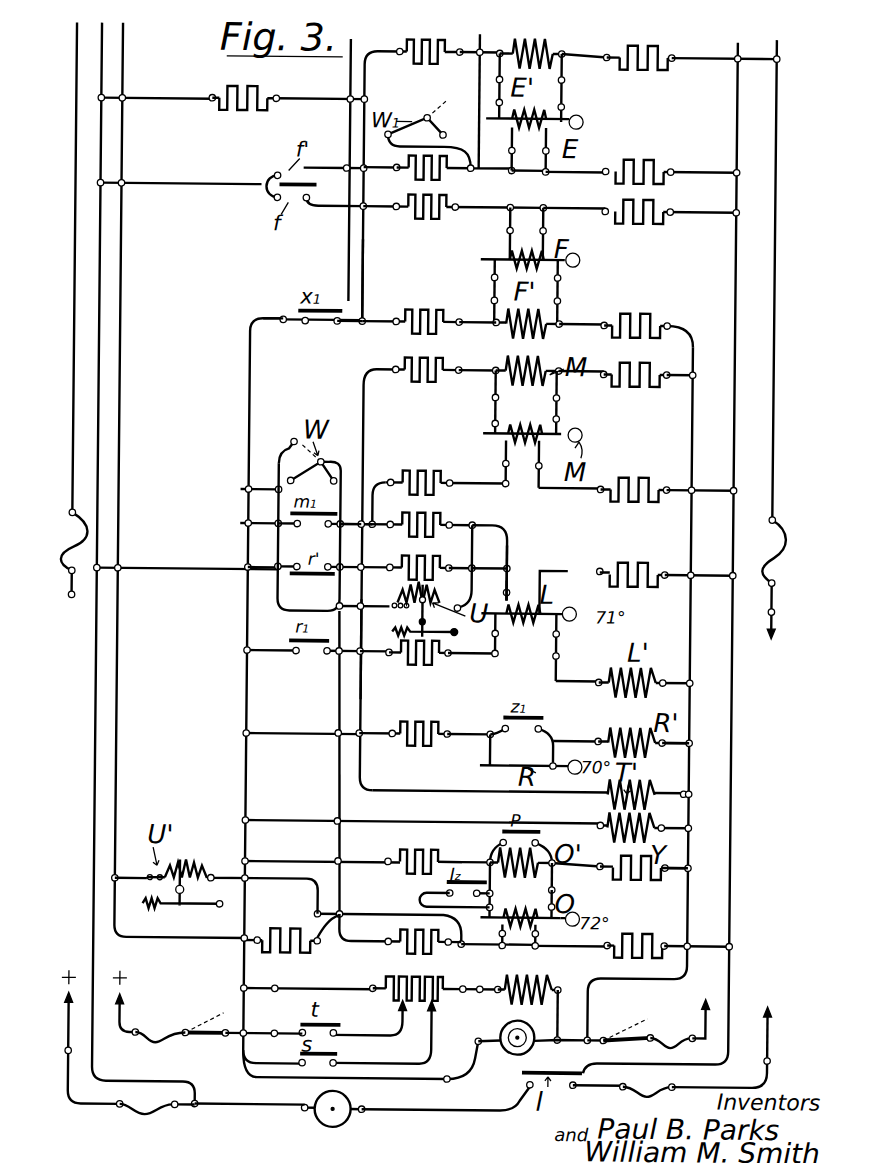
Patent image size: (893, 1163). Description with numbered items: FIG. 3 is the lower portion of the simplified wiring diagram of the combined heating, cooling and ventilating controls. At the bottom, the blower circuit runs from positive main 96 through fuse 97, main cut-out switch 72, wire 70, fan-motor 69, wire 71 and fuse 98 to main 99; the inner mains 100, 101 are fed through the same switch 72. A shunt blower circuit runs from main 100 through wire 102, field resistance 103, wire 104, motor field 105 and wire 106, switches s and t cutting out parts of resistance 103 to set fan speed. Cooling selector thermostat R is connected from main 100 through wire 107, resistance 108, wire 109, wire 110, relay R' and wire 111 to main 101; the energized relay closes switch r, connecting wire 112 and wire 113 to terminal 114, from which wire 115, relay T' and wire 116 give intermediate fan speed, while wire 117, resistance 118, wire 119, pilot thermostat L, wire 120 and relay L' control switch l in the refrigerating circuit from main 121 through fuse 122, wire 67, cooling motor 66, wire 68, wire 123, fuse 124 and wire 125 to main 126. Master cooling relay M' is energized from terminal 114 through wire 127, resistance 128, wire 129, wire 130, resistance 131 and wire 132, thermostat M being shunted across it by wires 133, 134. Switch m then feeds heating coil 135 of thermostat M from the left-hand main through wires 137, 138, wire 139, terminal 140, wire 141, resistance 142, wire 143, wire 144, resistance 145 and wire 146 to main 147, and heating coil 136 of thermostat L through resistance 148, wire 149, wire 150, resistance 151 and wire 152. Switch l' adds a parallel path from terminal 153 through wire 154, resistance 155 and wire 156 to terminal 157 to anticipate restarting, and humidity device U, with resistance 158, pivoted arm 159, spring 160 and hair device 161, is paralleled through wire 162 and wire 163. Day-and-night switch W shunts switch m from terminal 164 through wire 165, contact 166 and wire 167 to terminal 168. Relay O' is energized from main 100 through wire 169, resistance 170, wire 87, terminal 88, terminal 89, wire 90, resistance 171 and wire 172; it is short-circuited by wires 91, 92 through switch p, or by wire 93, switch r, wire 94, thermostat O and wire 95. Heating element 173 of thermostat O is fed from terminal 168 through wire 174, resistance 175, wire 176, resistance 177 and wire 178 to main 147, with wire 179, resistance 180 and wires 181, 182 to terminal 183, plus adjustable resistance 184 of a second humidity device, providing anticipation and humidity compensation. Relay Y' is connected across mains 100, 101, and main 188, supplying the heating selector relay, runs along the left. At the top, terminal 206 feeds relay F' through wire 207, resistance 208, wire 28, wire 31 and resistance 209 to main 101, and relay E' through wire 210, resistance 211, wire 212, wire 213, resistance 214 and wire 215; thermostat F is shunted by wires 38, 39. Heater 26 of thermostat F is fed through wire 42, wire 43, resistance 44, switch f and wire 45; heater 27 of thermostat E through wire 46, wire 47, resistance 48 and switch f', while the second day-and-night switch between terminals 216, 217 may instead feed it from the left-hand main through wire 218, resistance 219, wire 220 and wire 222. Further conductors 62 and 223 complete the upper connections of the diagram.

The auxiliary electric heater 26 is at (527, 234).
The heating coil 27 is at (535, 113).
The wire 28 is at (466, 325).
The wire 31 is at (571, 326).
The wire 38 is at (492, 289).
The wire 39 is at (560, 289).
The wire 42 is at (641, 220).
The wire 43 is at (335, 216).
The resistance 44 is at (436, 220).
The wire 45 is at (179, 198).
The wire 46 is at (642, 180).
The wire 47 is at (502, 170).
The resistance 48 is at (387, 181).
The wire 62 is at (346, 77).
The cooling motor 66 is at (328, 1126).
The wire 67 is at (228, 1108).
The wire 68 is at (412, 1112).
The fan-motor 69 is at (503, 1033).
The wire 70 is at (250, 1078).
The wire 71 is at (566, 1043).
The main cut-out switch 72 is at (612, 1043).
The wire 87 is at (449, 858).
The terminal 88 is at (477, 858).
The terminal 89 is at (563, 880).
The wire 90 is at (575, 898).
The wire 91 is at (489, 846).
The wire 92 is at (547, 847).
The wire 93 is at (515, 907).
The wire 94 is at (428, 898).
The wire 95 is at (548, 908).
The positive main 96 is at (131, 1003).
The fuse 97 is at (158, 1046).
The fuse 98 is at (673, 1031).
The main 99 is at (707, 1009).
The inner main 100 is at (250, 336).
The inner main 101 is at (690, 334).
The wire 102 is at (270, 992).
The field resistance 103 is at (382, 987).
The wire 104 is at (478, 992).
The motor field 105 is at (549, 996).
The wire 106 is at (562, 1000).
The wire 107 is at (322, 737).
The resistance 108 is at (392, 737).
The wire 109 is at (470, 737).
The wire 110 is at (577, 751).
The wire 111 is at (662, 744).
The wire 112 is at (268, 656).
The wire 113 is at (328, 656).
The terminal 114 is at (363, 665).
The wire 115 is at (375, 792).
The wire 116 is at (668, 795).
The wire 117 is at (380, 656).
The resistance 118 is at (420, 667).
The wire 119 is at (478, 656).
The wire 120 is at (555, 682).
The main 121 is at (67, 1086).
The fuse 122 is at (148, 1118).
The wire 123 is at (600, 1101).
The fuse 124 is at (649, 1101).
The wire 125 is at (719, 1075).
The main 126 is at (767, 1043).
The wire 127 is at (362, 380).
The resistance 128 is at (415, 383).
The wire 129 is at (463, 376).
The wire 130 is at (598, 391).
The resistance 131 is at (645, 386).
The wire 132 is at (668, 378).
The wire 133 is at (494, 407).
The wire 134 is at (560, 410).
The heating coil 135 is at (505, 456).
The heating coil 136 is at (97, 657).
The wire 137 is at (185, 581).
The wire 138 is at (320, 554).
The wire 139 is at (383, 555).
The terminal 140 is at (373, 528).
The wire 141 is at (414, 492).
The resistance 142 is at (412, 472).
The wire 143 is at (475, 488).
The wire 144 is at (570, 490).
The resistance 145 is at (636, 500).
The wire 146 is at (700, 491).
The main 147 is at (733, 460).
The resistance 148 is at (418, 518).
The wire 149 is at (510, 535).
The wire 150 is at (574, 588).
The resistance 151 is at (640, 586).
The wire 152 is at (693, 580).
The terminal 153 is at (272, 571).
The wire 154 is at (408, 573).
The resistance 155 is at (458, 557).
The wire 156 is at (494, 555).
The terminal 157 is at (495, 552).
The resistance 158 is at (459, 568).
The pivoted control arm 159 is at (406, 610).
The spring 160 is at (407, 633).
The humidity device 161 is at (450, 634).
The wire 162 is at (350, 594).
The wire 163 is at (475, 594).
The terminal 164 is at (243, 521).
The wire 165 is at (243, 488).
The contact 166 is at (293, 440).
The wire 167 is at (340, 458).
The terminal 168 is at (342, 522).
The wire 169 is at (400, 874).
The resistance 170 is at (340, 855).
The resistance 171 is at (654, 892).
The wire 172 is at (646, 871).
The auxiliary heating element 173 is at (519, 939).
The wire 174 is at (340, 800).
The resistance 175 is at (418, 955).
The wire 176 is at (560, 946).
The resistance 177 is at (655, 942).
The wire 178 is at (690, 948).
The wire 179 is at (120, 57).
The resistance 180 is at (280, 954).
The wire 181 is at (326, 940).
The wire 182 is at (375, 917).
The terminal 183 is at (472, 947).
The adjustable resistance 184 is at (195, 865).
The main 188 is at (72, 136).
The terminal 206 is at (270, 326).
The wire 207 is at (330, 326).
The resistance 208 is at (412, 309).
The resistance 209 is at (655, 320).
The wire 210 is at (360, 251).
The resistance 211 is at (429, 66).
The wire 212 is at (470, 52).
The wire 213 is at (589, 72).
The resistance 214 is at (644, 66).
The wire 215 is at (708, 58).
The terminal 216 is at (441, 178).
The terminal 217 is at (478, 172).
The wire 218 is at (157, 113).
The resistance 219 is at (244, 112).
The wire 220 is at (320, 112).
The wire 222 is at (458, 110).
The wire 223 is at (475, 72).